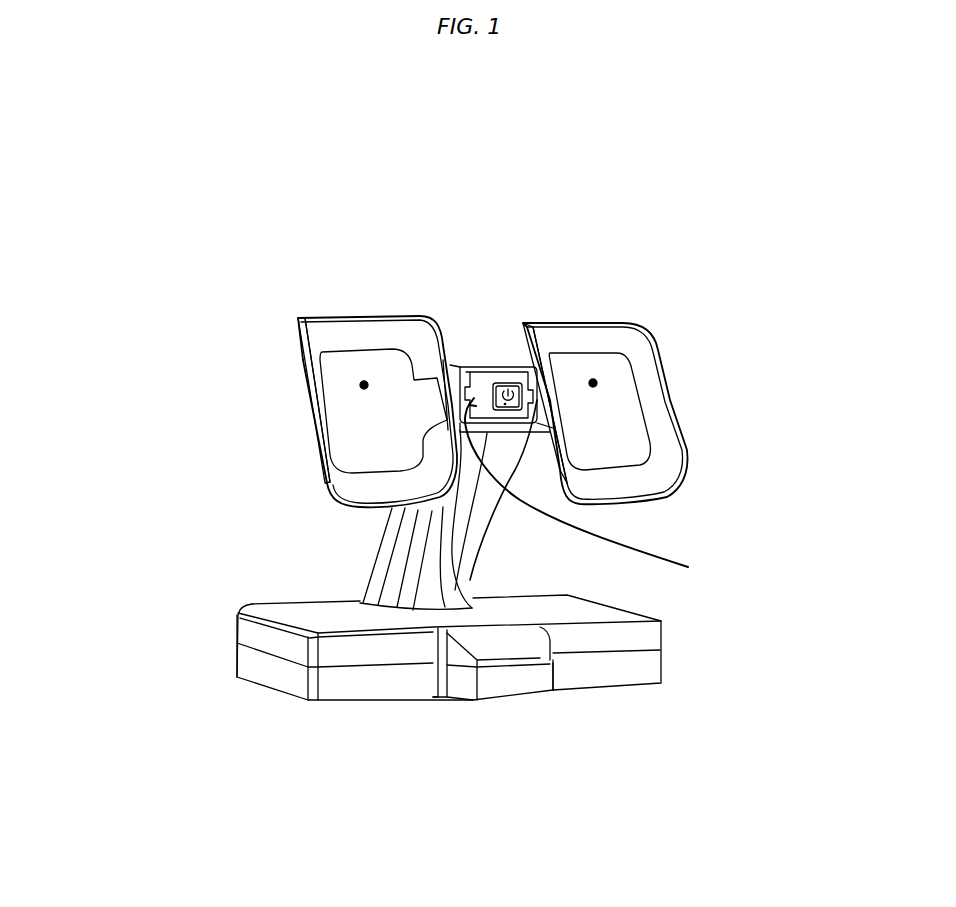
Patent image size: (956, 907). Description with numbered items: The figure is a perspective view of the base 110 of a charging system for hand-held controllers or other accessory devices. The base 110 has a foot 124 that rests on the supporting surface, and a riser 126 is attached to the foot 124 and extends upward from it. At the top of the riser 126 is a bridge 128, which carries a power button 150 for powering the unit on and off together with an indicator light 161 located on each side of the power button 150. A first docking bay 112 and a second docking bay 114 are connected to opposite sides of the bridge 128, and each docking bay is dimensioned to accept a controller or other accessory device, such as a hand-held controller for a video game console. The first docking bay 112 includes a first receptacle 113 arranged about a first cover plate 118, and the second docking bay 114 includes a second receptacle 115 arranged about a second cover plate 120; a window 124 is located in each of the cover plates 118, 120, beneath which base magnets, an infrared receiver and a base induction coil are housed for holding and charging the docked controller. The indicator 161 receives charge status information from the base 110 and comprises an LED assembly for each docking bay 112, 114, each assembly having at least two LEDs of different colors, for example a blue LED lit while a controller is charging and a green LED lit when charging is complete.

The base 110 is at (630, 210).
The first docking bay 112 is at (336, 286).
The first receptacle 113 is at (298, 318).
The second docking bay 114 is at (563, 298).
The second receptacle 115 is at (651, 328).
The first cover plate 118 is at (337, 407).
The second cover plate 120 is at (610, 413).
The foot 124 is at (364, 385).
The riser 126 is at (380, 552).
The bridge 128 is at (508, 364).
The power button 150 is at (497, 378).
The indicator 161 is at (680, 562).